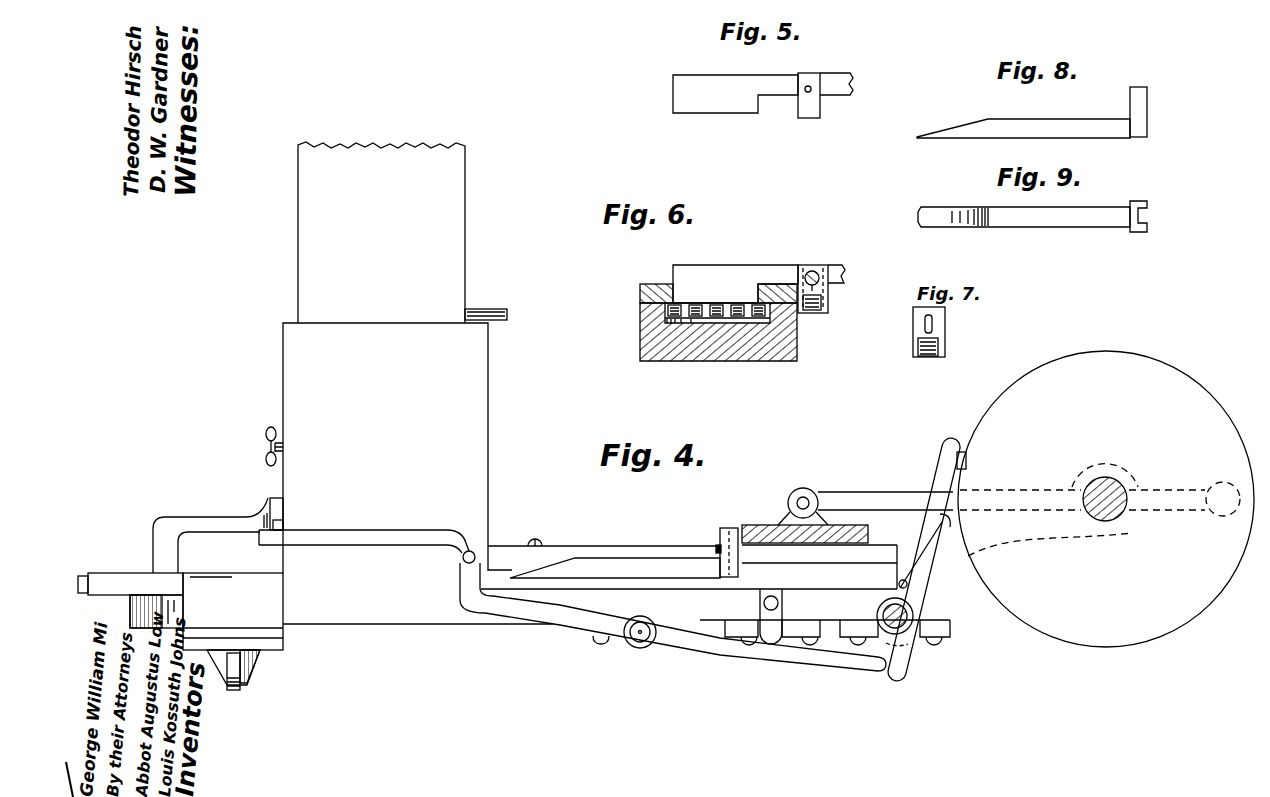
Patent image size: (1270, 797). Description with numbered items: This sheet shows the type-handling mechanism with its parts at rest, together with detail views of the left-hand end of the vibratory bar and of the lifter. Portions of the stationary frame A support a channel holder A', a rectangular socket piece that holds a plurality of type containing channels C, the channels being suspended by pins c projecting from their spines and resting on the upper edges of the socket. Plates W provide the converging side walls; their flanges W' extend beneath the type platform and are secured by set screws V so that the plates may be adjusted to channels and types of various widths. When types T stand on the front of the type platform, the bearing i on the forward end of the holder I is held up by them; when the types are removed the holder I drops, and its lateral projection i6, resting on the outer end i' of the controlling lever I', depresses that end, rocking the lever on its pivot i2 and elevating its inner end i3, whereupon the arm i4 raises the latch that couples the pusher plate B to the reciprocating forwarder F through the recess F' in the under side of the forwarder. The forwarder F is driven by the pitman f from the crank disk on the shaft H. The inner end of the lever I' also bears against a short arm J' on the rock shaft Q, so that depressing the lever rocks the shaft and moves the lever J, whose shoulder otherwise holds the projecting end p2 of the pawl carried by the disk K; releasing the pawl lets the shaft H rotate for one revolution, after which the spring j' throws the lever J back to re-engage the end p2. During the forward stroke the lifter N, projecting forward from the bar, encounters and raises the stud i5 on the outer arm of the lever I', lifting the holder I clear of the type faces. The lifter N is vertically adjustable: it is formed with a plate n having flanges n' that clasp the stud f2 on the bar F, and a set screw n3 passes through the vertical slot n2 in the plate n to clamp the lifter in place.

In FIG. 4, the type containing channel C is at (381, 232).
In FIG. 4, the pin c is at (489, 303).
In FIG. 4, the channel holder A' is at (385, 448).
In FIG. 4, the flange W' is at (258, 446).
In FIG. 4, the holder I is at (210, 532).
In FIG. 4, the bearing i is at (165, 553).
In FIG. 4, the lateral projection i6 is at (280, 518).
In FIG. 4, the controlling lever I' is at (364, 529).
In FIG. 4, the outer end of controlling lever i' is at (315, 519).
In FIG. 4, the stud i5 is at (476, 552).
In FIG. 4, the types T is at (130, 569).
In FIG. 4, the plate W is at (206, 611).
In FIG. 4, the stationary frame A is at (418, 606).
In FIG. 4, the set screw V is at (238, 670).
In FIG. 4, the inner end of controlling lever i3 is at (673, 623).
In FIG. 4, the pivot i2 is at (637, 646).
In FIG. 4, the lifter N is at (619, 566).
In FIG. 6, the lifter N is at (821, 305).
In FIG. 7, the lifter N is at (918, 352).
In FIG. 8, the lifter N is at (1100, 102).
In FIG. 9, the lifter N is at (1024, 205).
In FIG. 4, the set screw n3 is at (718, 541).
In FIG. 6, the set screw n3 is at (816, 272).
In FIG. 4, the recess F' is at (805, 515).
In FIG. 4, the pitman f is at (905, 489).
In FIG. 4, the arm i4 is at (779, 604).
In FIG. 4, the spring j' is at (923, 548).
In FIG. 4, the projecting end of pawl p2 is at (968, 464).
In FIG. 4, the lever J is at (925, 549).
In FIG. 4, the rock shaft Q is at (917, 611).
In FIG. 4, the short arm J' is at (918, 658).
In FIG. 4, the disk K is at (1106, 499).
In FIG. 4, the shaft H is at (1108, 522).
In FIG. 5, the reciprocating forwarder F is at (735, 81).
In FIG. 6, the reciprocating forwarder F is at (735, 272).
In FIG. 5, the stud f2 is at (816, 72).
In FIG. 6, the pusher plate B is at (765, 318).
In FIG. 6, the vertical slot n2 is at (811, 271).
In FIG. 7, the vertical slot n2 is at (924, 321).
In FIG. 7, the plate n is at (939, 332).
In FIG. 9, the plate n is at (1117, 237).
In FIG. 9, the flange n' is at (1151, 209).